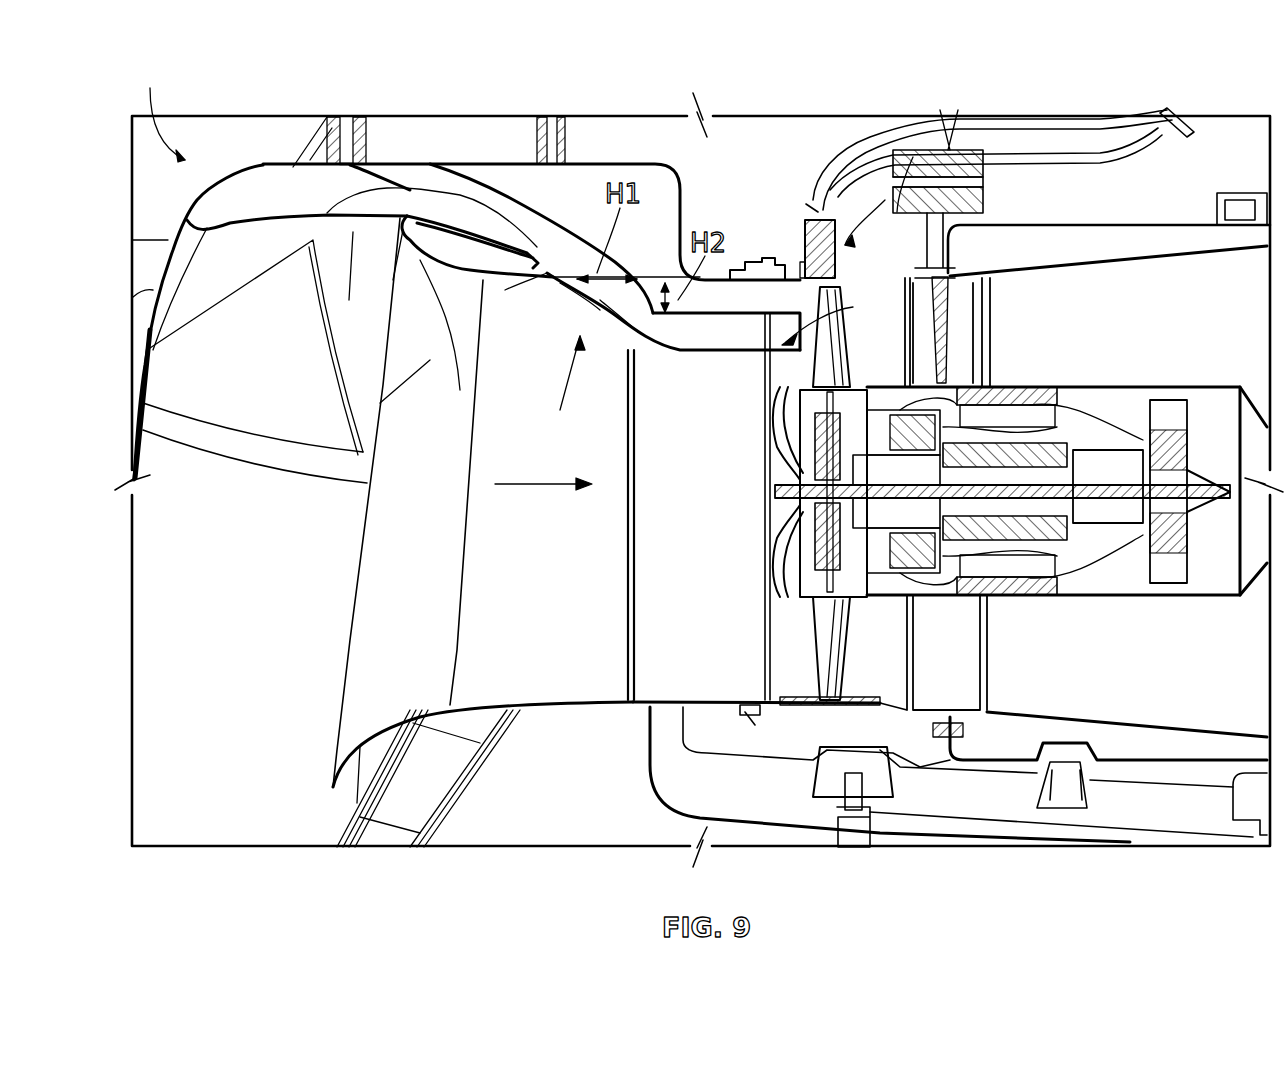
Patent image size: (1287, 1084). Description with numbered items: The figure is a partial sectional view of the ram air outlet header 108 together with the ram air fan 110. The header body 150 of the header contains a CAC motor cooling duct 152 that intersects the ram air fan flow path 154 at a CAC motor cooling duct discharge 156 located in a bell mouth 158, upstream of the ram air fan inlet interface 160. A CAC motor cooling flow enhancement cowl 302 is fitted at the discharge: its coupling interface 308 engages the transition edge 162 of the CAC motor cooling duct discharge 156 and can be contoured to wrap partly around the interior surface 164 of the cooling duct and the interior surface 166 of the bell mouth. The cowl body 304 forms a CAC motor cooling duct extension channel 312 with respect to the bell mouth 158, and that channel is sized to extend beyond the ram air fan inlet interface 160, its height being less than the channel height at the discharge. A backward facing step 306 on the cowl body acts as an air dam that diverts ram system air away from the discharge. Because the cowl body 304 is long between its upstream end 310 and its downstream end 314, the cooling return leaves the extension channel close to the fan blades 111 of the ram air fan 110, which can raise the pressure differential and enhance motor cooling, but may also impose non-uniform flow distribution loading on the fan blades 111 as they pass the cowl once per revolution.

The ram air outlet header 108 is at (156, 109).
The ram air fan 110 is at (945, 150).
The fan blades 111 is at (840, 287).
The header body 150 is at (265, 180).
The CAC motor cooling duct 152 is at (447, 205).
The ram air fan flow path 154 is at (537, 486).
The CAC motor cooling duct discharge 156 is at (630, 318).
The bell mouth 158 is at (373, 553).
The ram air fan inlet interface 160 is at (753, 280).
The transition edge 162 is at (548, 284).
The interior surface of the CAC motor cooling duct 164 is at (513, 183).
The interior surface of the bell mouth 166 is at (360, 425).
The CAC motor cooling flow enhancement cowl 302 is at (720, 330).
The cowl body 304 is at (654, 352).
The backward facing step 306 is at (613, 324).
The coupling interface 308 is at (564, 307).
The upstream end 310 is at (558, 391).
The CAC motor cooling duct extension channel 312 is at (712, 296).
The downstream end 314 is at (845, 319).